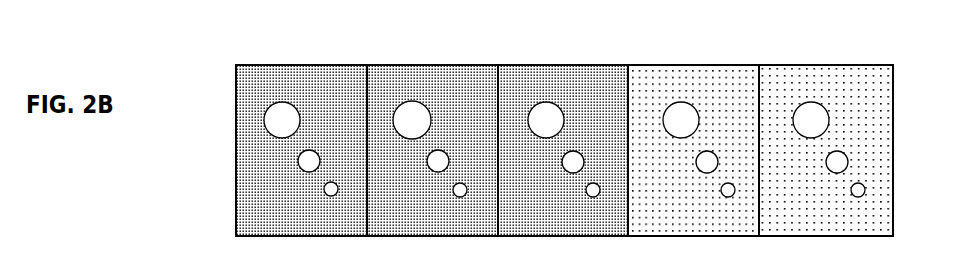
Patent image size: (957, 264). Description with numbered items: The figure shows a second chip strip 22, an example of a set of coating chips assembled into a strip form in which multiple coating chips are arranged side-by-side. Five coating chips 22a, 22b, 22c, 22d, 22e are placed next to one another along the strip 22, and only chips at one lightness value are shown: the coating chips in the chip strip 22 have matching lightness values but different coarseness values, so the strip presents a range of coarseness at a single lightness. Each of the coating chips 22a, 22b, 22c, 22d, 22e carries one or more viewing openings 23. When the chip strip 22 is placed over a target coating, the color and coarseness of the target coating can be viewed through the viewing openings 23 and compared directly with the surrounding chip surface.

The second chip strip 22 is at (209, 104).
The coating chip 22a is at (268, 121).
The coating chip 22b is at (430, 30).
The coating chip 22c is at (565, 30).
The coating chip 22d is at (677, 30).
The coating chip 22e is at (826, 30).
The viewing openings 23 is at (324, 192).